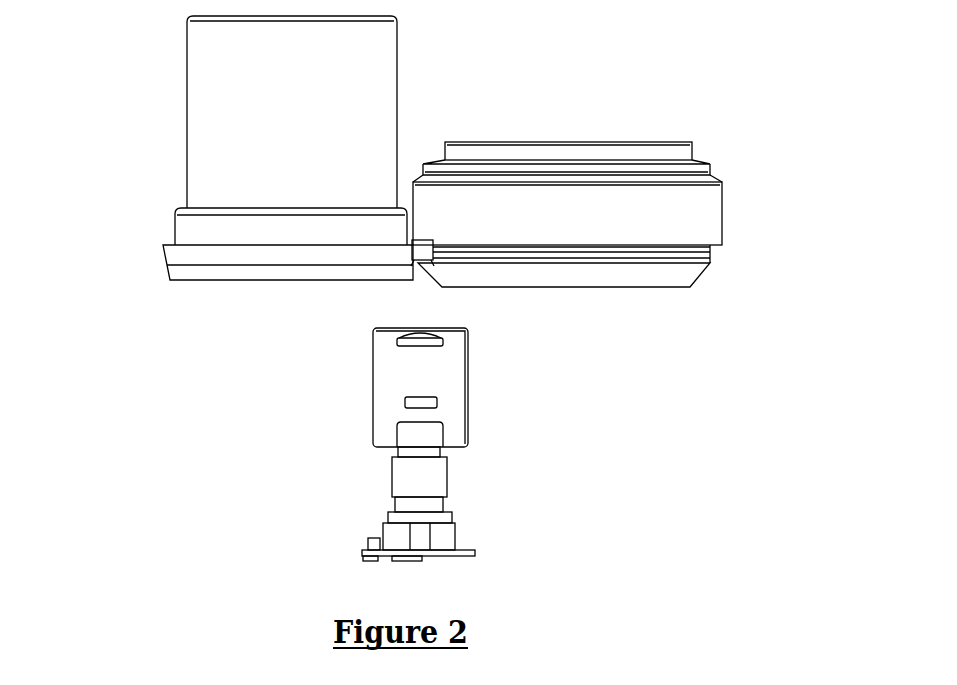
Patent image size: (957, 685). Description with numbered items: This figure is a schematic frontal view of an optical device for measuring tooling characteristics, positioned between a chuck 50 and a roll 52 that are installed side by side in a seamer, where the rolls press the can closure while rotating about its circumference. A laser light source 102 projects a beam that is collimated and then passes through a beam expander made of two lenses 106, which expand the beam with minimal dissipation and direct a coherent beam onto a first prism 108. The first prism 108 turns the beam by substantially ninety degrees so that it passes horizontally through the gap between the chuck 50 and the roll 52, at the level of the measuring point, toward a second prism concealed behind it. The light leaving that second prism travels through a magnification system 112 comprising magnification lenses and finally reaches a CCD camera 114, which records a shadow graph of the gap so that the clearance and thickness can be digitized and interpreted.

The chuck 50 is at (187, 83).
The roll 52 is at (722, 220).
The first prism 108 is at (407, 262).
The magnification system 112 is at (472, 353).
The lenses 106 is at (392, 355).
The laser light source 102 is at (452, 468).
The CCD camera 114 is at (450, 542).